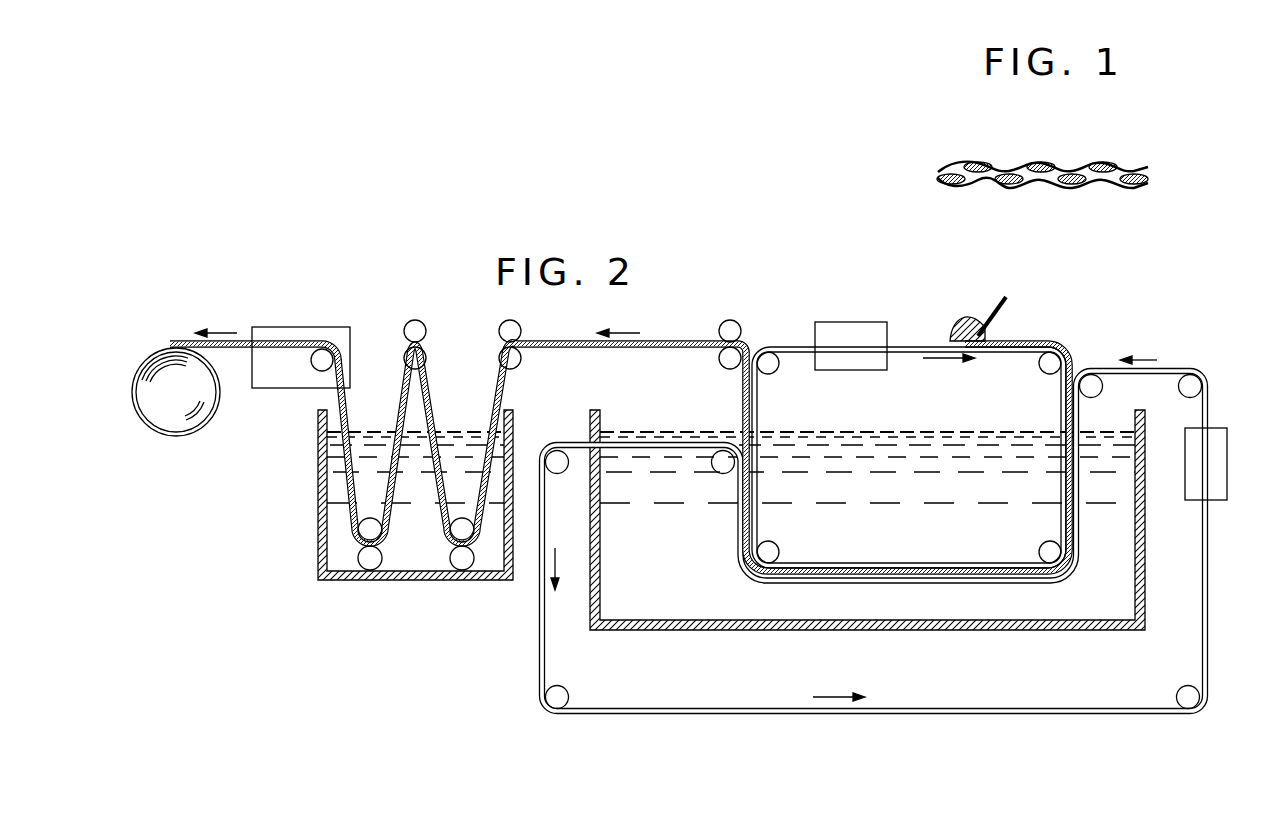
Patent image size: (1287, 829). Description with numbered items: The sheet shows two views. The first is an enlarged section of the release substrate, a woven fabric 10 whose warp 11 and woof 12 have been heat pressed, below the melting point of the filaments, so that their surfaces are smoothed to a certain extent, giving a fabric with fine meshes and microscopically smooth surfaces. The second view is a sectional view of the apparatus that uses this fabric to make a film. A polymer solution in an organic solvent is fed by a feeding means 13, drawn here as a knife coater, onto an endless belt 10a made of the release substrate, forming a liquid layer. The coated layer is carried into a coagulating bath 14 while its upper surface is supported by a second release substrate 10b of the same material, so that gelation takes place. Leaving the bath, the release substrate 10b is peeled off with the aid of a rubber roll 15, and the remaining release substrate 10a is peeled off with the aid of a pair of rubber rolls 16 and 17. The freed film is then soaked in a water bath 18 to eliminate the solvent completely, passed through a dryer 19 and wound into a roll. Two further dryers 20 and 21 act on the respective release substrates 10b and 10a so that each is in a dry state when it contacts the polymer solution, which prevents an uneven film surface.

In FIG. 1, the woven fabric 10 is at (1138, 153).
In FIG. 1, the warp 11 is at (1040, 163).
In FIG. 1, the woof 12 is at (1076, 165).
In FIG. 2, the endless belt 10a is at (905, 353).
In FIG. 2, the release substrate 10b is at (1184, 368).
In FIG. 2, the feeding means 13 is at (1002, 319).
In FIG. 2, the coagulating bath 14 is at (937, 631).
In FIG. 2, the rubber roll 15 is at (720, 472).
In FIG. 2, the rubber roll 16 is at (774, 371).
In FIG. 2, the rubber roll 17 is at (727, 320).
In FIG. 2, the water bath 18 is at (412, 581).
In FIG. 2, the dryer 19 is at (330, 327).
In FIG. 2, the dryer 20 is at (1185, 488).
In FIG. 2, the dryer 21 is at (862, 322).